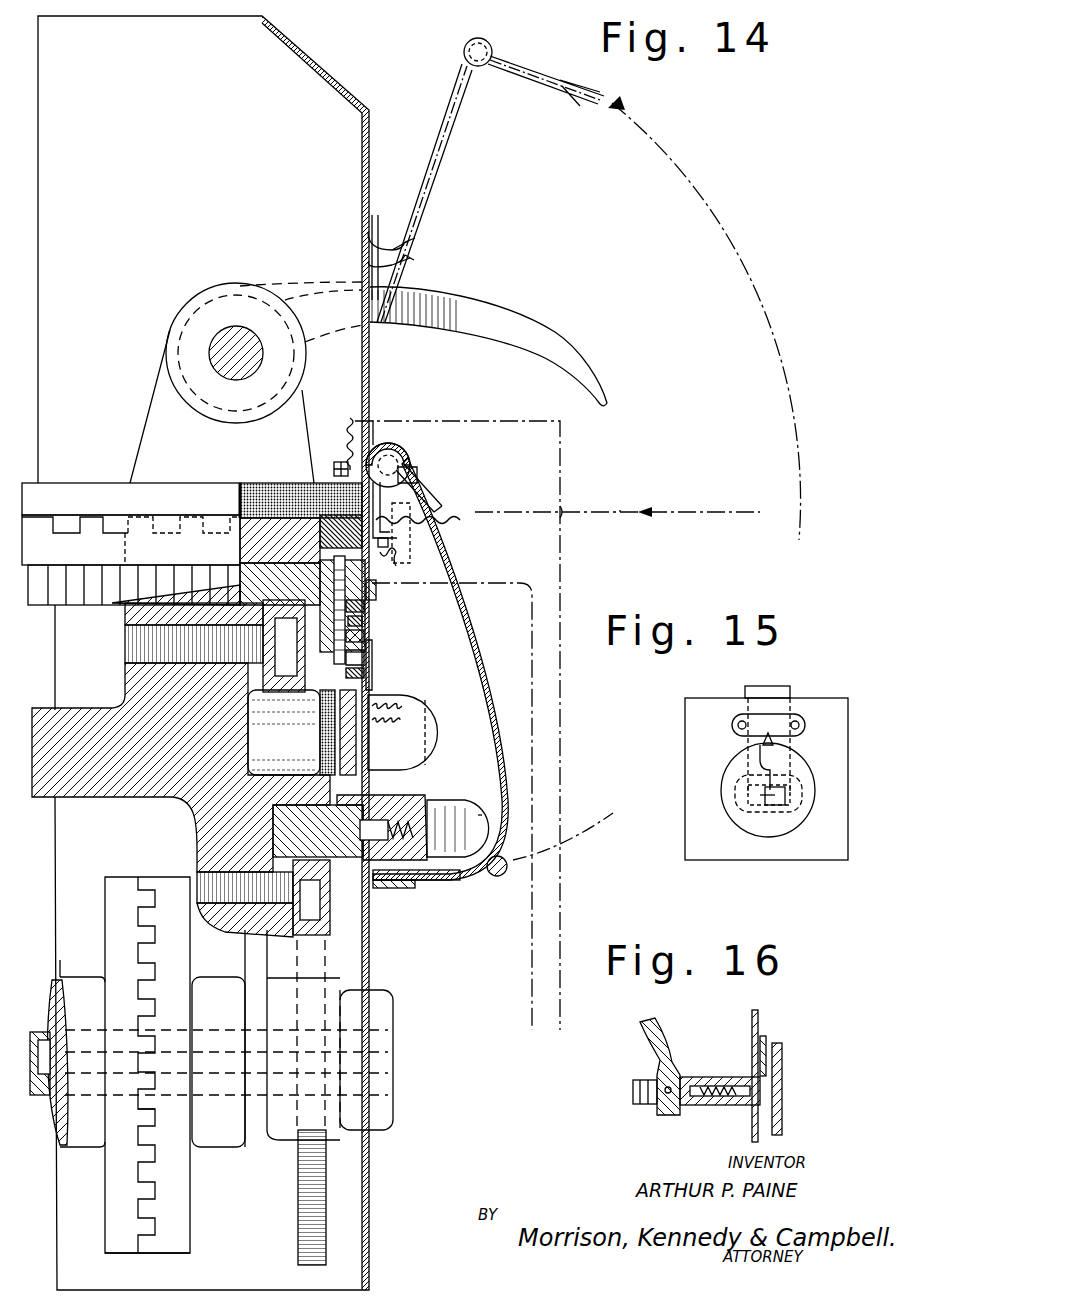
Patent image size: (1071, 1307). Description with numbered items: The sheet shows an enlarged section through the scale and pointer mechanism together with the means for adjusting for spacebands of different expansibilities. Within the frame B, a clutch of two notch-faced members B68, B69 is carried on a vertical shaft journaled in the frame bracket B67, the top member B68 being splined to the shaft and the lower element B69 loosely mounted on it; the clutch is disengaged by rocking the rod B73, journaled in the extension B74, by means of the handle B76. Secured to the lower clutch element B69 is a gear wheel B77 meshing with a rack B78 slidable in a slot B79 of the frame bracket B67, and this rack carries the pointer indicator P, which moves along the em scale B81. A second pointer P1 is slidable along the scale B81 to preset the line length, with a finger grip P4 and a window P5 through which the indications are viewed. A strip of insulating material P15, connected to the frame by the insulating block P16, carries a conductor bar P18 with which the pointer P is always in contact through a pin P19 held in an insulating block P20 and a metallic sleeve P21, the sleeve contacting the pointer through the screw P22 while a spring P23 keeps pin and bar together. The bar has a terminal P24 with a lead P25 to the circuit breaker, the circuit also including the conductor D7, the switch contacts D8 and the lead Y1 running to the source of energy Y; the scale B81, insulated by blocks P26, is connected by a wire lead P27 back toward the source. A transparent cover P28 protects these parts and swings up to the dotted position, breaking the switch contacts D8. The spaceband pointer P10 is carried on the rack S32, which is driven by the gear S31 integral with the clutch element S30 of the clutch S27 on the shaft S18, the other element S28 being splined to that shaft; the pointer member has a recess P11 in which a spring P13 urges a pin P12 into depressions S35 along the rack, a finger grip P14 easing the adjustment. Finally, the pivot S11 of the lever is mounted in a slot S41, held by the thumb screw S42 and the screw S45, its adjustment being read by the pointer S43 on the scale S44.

In FIG. 14, the frame B is at (203, 653).
In FIG. 14, the rod B73 is at (236, 353).
In FIG. 14, the extension B74 is at (166, 405).
In FIG. 14, the handle B76 is at (480, 316).
In FIG. 14, the clutch member B68 is at (131, 499).
In FIG. 14, the clutch element B69 is at (131, 541).
In FIG. 14, the slot B79 is at (195, 545).
In FIG. 14, the rack B78 is at (260, 585).
In FIG. 14, the gear wheel B77 is at (92, 605).
In FIG. 14, the frame bracket B67 is at (142, 760).
In FIG. 14, the em scale B81 is at (364, 755).
In FIG. 14, the terminal P24 is at (350, 418).
In FIG. 14, the block of insulating material P16 is at (265, 478).
In FIG. 14, the strip of insulating material P15 is at (365, 505).
In FIG. 14, the switch contacts D8 is at (430, 530).
In FIG. 14, the lead P25 is at (560, 450).
In FIG. 14, the conductor D7 is at (532, 712).
In FIG. 14, the source of electric energy Y is at (617, 510).
In FIG. 14, the lead Y1 is at (618, 512).
In FIG. 14, the conductor bar P18 is at (376, 590).
In FIG. 14, the metallic sleeve P21 is at (364, 606).
In FIG. 14, the screw P22 is at (362, 621).
In FIG. 14, the pointer P1 is at (364, 636).
In FIG. 14, the pointer indicator P is at (364, 656).
In FIG. 14, the spring P23 is at (364, 673).
In FIG. 14, the window P5 is at (372, 680).
In FIG. 14, the finger grip P4 is at (400, 725).
In FIG. 14, the wire lead P27 is at (470, 708).
In FIG. 14, the transparent cover P28 is at (507, 757).
In FIG. 14, the pin P19 is at (318, 690).
In FIG. 14, the block of insulating material P20 is at (322, 730).
In FIG. 14, the blocks of insulating material P26 is at (344, 752).
In FIG. 14, the finger grip P14 is at (478, 815).
In FIG. 14, the pointer P10 is at (398, 810).
In FIG. 14, the recess P11 is at (440, 820).
In FIG. 14, the spring P13 is at (410, 880).
In FIG. 14, the pin P12 is at (400, 888).
In FIG. 14, the depressions S35 is at (275, 835).
In FIG. 14, the rack S32 is at (330, 895).
In FIG. 14, the shaft S18 is at (47, 1088).
In FIG. 14, the clutch element S28 is at (147, 1065).
In FIG. 14, the clutch element S30 is at (172, 1108).
In FIG. 14, the clutch S27 is at (147, 1264).
In FIG. 14, the gear S31 is at (310, 1218).
In FIG. 15, the scale S44 is at (782, 718).
In FIG. 16, the scale S44 is at (758, 1030).
In FIG. 15, the pointer S43 is at (760, 745).
In FIG. 16, the pointer S43 is at (766, 1040).
In FIG. 15, the slot S41 is at (738, 805).
In FIG. 16, the slot S41 is at (672, 1066).
In FIG. 15, the pivot S11 is at (762, 805).
In FIG. 16, the pivot S11 is at (633, 1095).
In FIG. 15, the thumb screw S42 is at (790, 805).
In FIG. 16, the thumb screw S42 is at (782, 1065).
In FIG. 16, the screw S45 is at (700, 1092).